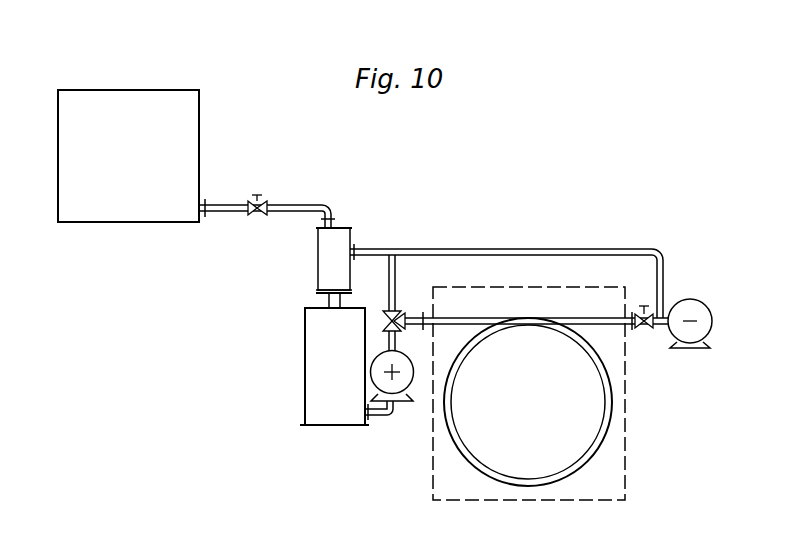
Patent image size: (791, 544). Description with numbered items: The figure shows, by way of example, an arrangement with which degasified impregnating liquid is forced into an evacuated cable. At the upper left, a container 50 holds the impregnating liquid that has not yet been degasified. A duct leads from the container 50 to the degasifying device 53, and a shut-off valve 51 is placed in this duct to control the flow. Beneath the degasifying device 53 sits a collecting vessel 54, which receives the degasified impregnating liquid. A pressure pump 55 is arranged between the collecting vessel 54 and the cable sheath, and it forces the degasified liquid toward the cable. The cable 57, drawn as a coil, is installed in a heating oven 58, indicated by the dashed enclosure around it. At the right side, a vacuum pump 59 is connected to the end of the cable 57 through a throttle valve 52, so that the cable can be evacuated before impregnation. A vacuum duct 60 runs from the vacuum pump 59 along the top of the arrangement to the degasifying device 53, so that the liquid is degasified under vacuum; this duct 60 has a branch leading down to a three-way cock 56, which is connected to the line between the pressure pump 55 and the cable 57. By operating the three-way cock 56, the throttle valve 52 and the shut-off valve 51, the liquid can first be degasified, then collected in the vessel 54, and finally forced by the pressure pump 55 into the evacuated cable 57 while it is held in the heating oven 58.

The container 50 is at (128, 112).
The shut-off valve 51 is at (259, 192).
The throttle valve 52 is at (646, 308).
The degasifying device 53 is at (330, 263).
The collecting vessel 54 is at (322, 370).
The pressure pump 55 is at (380, 378).
The three-way cock 56 is at (386, 321).
The cable 57 is at (521, 319).
The heating oven 58 is at (597, 295).
The vacuum pump 59 is at (691, 312).
The vacuum duct 60 is at (414, 250).